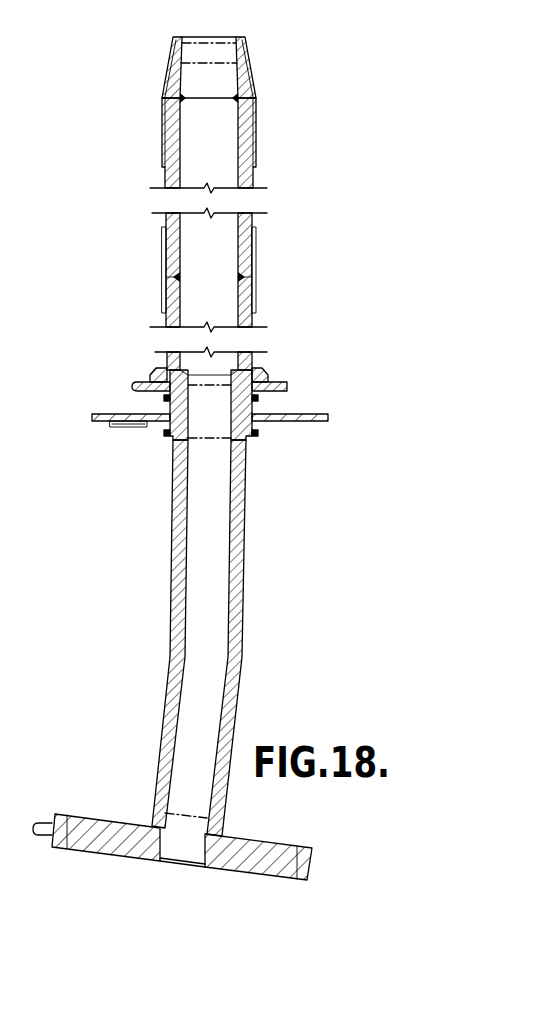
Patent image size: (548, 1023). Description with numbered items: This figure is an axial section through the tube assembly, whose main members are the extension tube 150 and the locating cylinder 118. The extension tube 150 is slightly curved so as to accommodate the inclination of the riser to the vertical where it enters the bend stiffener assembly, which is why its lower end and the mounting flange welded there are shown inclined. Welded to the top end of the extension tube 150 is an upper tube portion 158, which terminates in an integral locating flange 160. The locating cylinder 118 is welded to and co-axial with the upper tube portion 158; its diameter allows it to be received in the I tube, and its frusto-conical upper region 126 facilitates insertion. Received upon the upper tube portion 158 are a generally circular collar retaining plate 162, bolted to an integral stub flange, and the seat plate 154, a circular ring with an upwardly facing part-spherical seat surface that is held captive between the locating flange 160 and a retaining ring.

The frusto-conical upper region 126 is at (258, 102).
The locating cylinder 118 is at (256, 167).
The locating flange 160 is at (270, 363).
The upper tube portion 158 is at (137, 402).
The seat plate 154 is at (287, 385).
The collar retaining plate 162 is at (328, 416).
The extension tube 150 is at (247, 548).